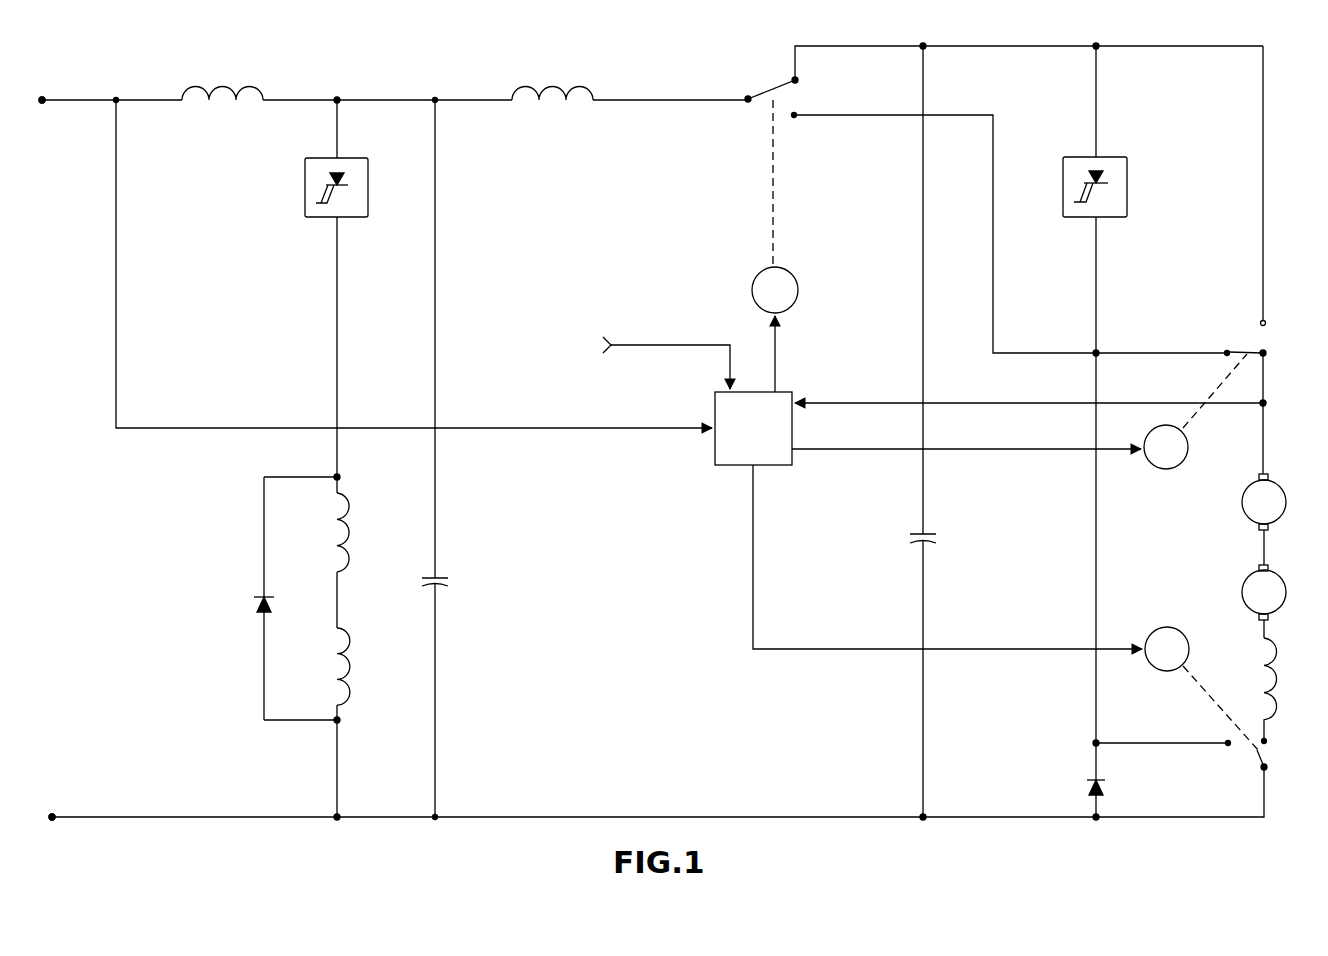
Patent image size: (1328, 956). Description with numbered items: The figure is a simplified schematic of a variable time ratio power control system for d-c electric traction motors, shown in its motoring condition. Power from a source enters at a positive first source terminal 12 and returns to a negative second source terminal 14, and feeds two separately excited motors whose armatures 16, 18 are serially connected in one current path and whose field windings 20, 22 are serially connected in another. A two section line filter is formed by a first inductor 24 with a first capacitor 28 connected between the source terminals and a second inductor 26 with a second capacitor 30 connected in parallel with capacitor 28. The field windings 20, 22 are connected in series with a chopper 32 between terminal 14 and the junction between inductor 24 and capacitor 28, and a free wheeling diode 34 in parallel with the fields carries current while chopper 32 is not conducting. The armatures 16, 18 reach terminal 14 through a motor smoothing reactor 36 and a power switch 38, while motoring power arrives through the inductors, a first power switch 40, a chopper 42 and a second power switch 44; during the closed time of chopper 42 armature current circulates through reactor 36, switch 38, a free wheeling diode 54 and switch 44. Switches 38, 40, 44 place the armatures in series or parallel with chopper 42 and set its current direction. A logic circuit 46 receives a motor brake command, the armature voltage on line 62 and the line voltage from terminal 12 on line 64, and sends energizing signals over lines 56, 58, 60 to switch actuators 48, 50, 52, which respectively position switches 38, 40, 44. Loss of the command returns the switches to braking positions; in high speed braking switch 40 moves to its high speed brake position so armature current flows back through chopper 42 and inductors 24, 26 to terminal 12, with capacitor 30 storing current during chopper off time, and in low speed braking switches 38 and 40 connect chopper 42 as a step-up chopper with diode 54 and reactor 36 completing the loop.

The first source terminal 12 is at (42, 98).
The second source terminal 14 is at (52, 820).
The armature 16 is at (1241, 511).
The armature 18 is at (1244, 578).
The field winding 20 is at (350, 538).
The field winding 22 is at (350, 678).
The first inductor 24 is at (234, 90).
The second inductor 26 is at (568, 90).
The first capacitor 28 is at (447, 581).
The second capacitor 30 is at (908, 540).
The chopper 32 is at (305, 173).
The free wheeling diode 34 is at (256, 610).
The motor smoothing reactor 36 is at (1262, 648).
The power switch 38 is at (1262, 771).
The first power switch 40 is at (770, 82).
The chopper 42 is at (1126, 166).
The second power switch 44 is at (1250, 342).
The logic circuit 46 is at (712, 468).
The switch actuator 48 is at (1173, 629).
The switch actuator 50 is at (754, 284).
The switch actuator 52 is at (1166, 473).
The free wheeling diode 54 is at (1082, 780).
The line 56 is at (1028, 648).
The line 58 is at (777, 362).
The line 60 is at (872, 458).
The line 62 is at (970, 404).
The line 64 is at (116, 192).